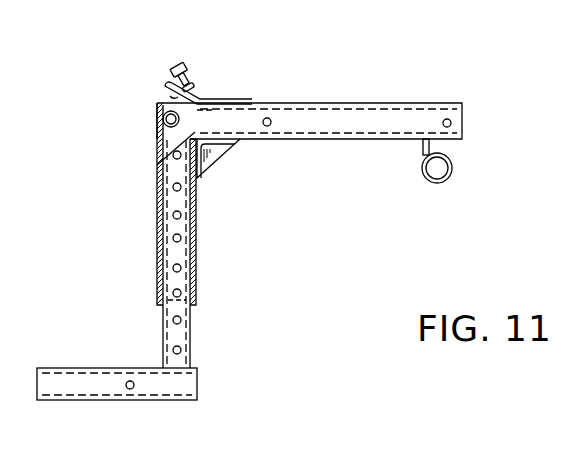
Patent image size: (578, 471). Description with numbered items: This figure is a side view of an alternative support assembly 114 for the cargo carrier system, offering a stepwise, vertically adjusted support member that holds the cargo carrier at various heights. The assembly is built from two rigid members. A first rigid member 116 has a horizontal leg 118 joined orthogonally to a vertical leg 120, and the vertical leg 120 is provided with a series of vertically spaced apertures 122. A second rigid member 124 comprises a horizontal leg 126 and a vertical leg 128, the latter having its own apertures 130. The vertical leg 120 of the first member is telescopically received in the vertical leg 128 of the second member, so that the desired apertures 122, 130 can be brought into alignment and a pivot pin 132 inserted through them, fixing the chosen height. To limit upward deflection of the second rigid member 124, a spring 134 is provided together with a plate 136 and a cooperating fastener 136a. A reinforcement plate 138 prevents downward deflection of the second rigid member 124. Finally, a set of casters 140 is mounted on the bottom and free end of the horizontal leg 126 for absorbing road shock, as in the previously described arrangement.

The alternative support assembly 114 is at (407, 77).
The first rigid member 116 is at (201, 389).
The horizontal leg 118 is at (92, 384).
The vertical leg 120 is at (192, 323).
The vertically spaced apertures 122 is at (180, 350).
The second rigid member 124 is at (460, 97).
The horizontal leg 126 is at (358, 122).
The vertical leg 128 is at (158, 254).
The apertures 130 is at (163, 190).
The pivot pin 132 is at (167, 112).
The spring 134 is at (158, 162).
The plate 136 is at (238, 100).
The fastener 136a is at (193, 72).
The reinforcement plate 138 is at (219, 153).
The casters 140 is at (446, 170).